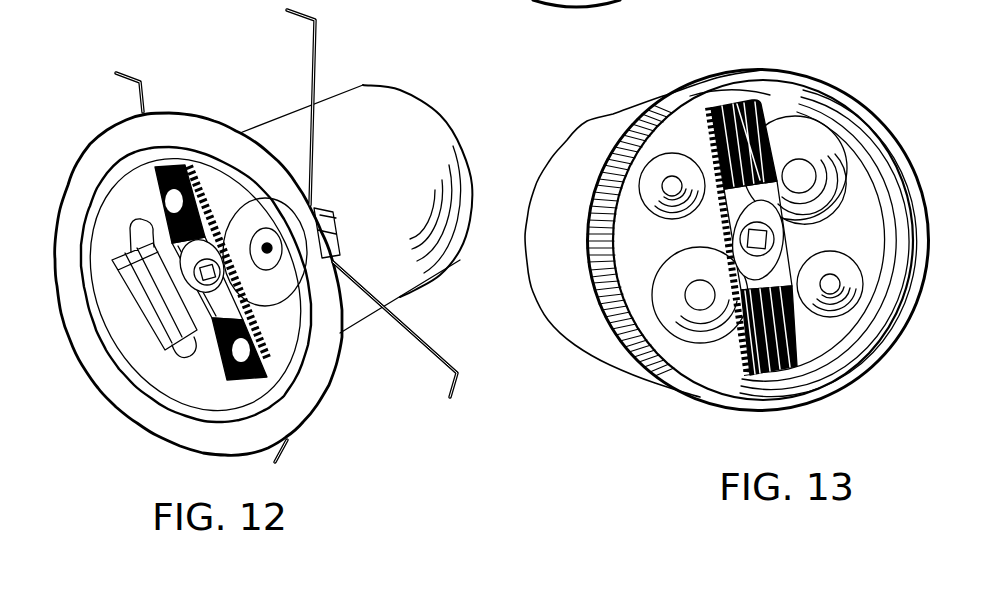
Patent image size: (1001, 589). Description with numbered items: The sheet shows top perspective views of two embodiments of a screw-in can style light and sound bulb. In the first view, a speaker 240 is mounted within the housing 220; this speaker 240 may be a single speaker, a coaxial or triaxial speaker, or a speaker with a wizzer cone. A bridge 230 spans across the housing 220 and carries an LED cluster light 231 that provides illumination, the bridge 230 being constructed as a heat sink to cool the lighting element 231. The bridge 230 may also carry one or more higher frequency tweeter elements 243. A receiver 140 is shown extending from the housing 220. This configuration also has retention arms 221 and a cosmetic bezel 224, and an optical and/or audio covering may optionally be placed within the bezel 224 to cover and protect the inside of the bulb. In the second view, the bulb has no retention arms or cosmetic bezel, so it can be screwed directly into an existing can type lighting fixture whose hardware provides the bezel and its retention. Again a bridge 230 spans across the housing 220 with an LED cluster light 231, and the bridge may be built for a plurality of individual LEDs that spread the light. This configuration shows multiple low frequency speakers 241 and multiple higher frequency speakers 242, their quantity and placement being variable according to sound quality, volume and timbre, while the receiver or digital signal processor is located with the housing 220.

In FIG. 12, the receiver 140 is at (140, 330).
In FIG. 12, the housing 220 is at (433, 110).
In FIG. 13, the housing 220 is at (538, 287).
In FIG. 12, the retention arms 221 is at (312, 55).
In FIG. 12, the cosmetic bezel 224 is at (320, 407).
In FIG. 12, the bridge 230 is at (255, 314).
In FIG. 13, the bridge 230 is at (742, 322).
In FIG. 12, the LED cluster light 231 is at (207, 262).
In FIG. 13, the LED cluster light 231 is at (776, 222).
In FIG. 12, the speaker 240 is at (275, 310).
In FIG. 13, the low frequency speakers 241 is at (800, 117).
In FIG. 13, the higher frequency speakers 242 is at (657, 153).
In FIG. 12, the higher frequency tweeter elements 243 is at (248, 355).